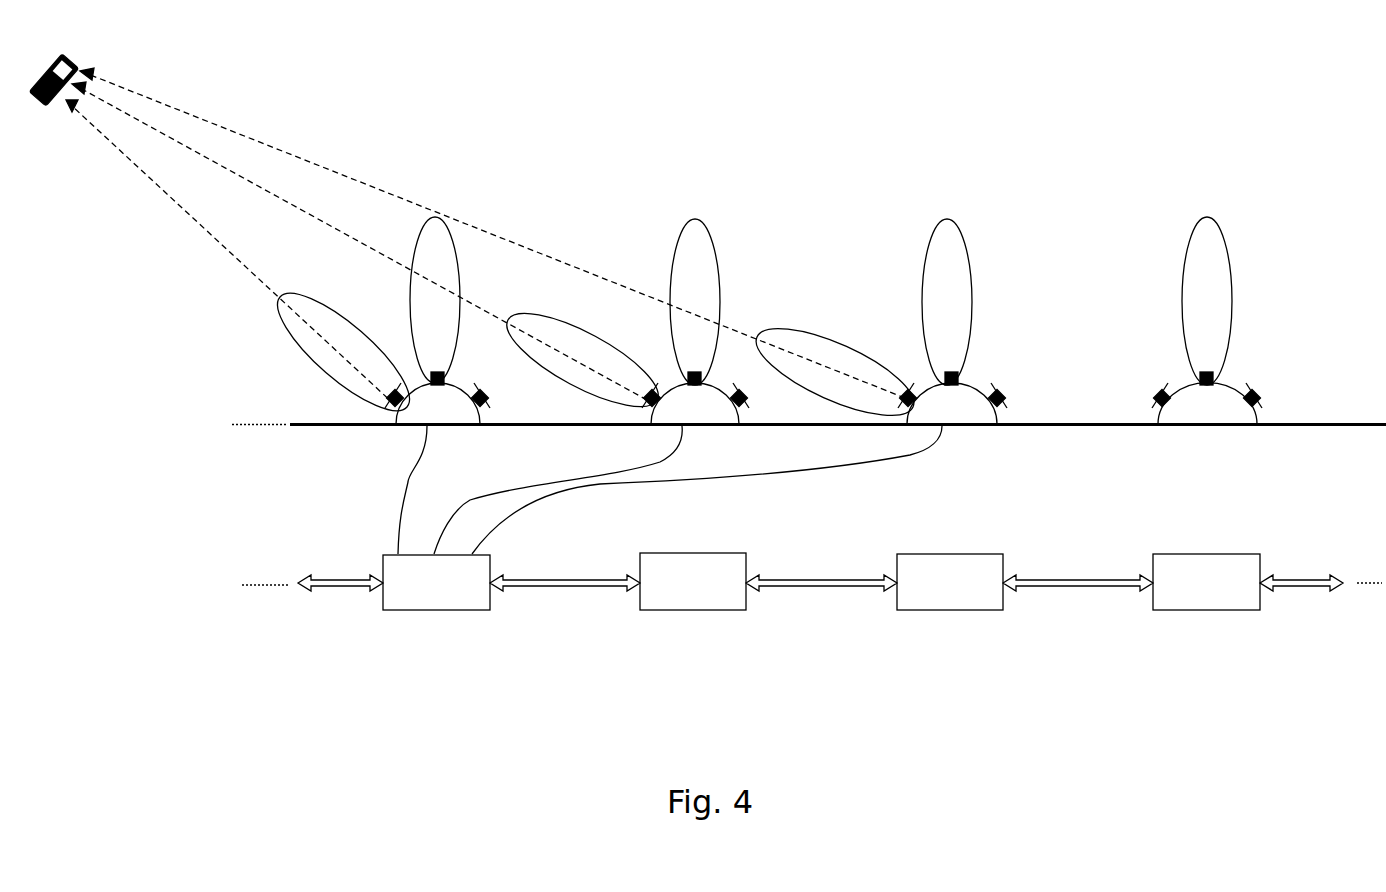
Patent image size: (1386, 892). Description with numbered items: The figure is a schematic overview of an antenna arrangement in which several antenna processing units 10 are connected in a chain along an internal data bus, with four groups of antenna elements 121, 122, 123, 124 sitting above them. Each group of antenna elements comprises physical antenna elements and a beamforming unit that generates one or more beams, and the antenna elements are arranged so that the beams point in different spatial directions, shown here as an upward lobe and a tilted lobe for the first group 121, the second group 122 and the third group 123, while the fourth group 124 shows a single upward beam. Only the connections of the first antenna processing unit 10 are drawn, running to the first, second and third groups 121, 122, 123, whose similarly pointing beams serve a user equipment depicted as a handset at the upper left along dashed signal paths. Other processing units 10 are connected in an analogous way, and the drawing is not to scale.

The antenna processing unit 10 is at (1190, 610).
The first group of antenna elements 121 is at (418, 421).
The second group of antenna elements 122 is at (676, 421).
The third group of antenna elements 123 is at (935, 421).
The fourth group of antenna elements 124 is at (1188, 421).